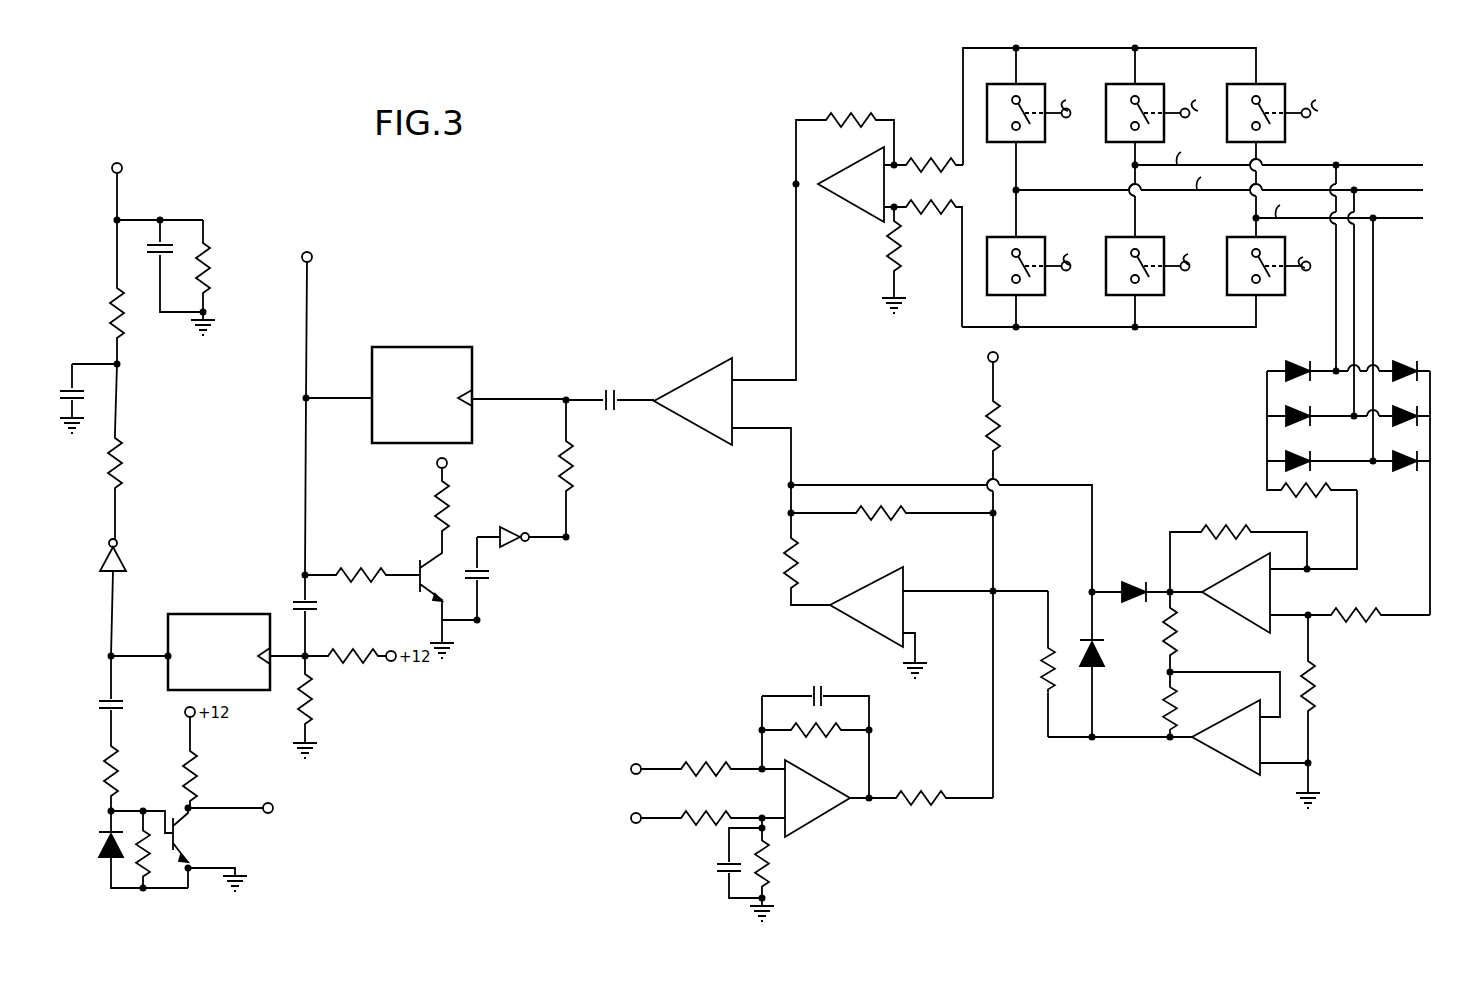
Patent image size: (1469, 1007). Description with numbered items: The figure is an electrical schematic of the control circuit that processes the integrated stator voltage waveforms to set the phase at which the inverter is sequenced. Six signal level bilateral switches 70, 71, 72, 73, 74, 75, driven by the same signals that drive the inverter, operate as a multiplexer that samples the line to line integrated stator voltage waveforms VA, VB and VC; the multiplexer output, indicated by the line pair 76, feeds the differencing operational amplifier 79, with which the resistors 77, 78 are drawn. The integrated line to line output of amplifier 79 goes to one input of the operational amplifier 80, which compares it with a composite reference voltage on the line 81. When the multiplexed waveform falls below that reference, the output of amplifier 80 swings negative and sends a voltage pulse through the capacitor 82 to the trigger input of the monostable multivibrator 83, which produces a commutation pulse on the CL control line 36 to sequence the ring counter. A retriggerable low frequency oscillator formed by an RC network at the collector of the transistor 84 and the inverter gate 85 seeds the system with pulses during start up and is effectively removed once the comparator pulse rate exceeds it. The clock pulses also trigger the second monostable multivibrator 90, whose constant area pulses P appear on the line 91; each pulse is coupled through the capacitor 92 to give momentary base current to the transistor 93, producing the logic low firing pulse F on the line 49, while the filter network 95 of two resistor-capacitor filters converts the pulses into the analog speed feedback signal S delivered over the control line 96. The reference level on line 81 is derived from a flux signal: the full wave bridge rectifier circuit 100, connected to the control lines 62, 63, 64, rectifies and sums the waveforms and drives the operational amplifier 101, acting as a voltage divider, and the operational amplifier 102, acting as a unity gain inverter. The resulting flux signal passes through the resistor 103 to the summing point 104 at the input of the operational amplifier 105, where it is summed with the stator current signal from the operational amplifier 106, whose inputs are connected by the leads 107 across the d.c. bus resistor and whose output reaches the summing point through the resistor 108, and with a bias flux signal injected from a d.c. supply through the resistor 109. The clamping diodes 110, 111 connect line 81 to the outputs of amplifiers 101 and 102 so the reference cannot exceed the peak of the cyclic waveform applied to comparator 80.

The CL control line 36 is at (309, 290).
The line 49 is at (229, 807).
The control line 62 is at (1425, 152).
The control line 63 is at (1396, 221).
The control line 64 is at (1384, 150).
The bilateral switch 70 is at (977, 66).
The bilateral switch 71 is at (1048, 216).
The bilateral switch 72 is at (1124, 66).
The bilateral switch 73 is at (1150, 214).
The bilateral switch 74 is at (1249, 68).
The bilateral switch 75 is at (1238, 216).
The line pair 76 is at (1118, 196).
The resistor 77 is at (930, 166).
The resistor 78 is at (950, 214).
The differencing operational amplifier 79 is at (852, 210).
The operational amplifier 80 is at (700, 378).
The line 81 is at (773, 428).
The capacitor 82 is at (608, 394).
The monostable multivibrator 83 is at (427, 399).
The transistor 84 is at (426, 565).
The inverter gate 85 is at (503, 533).
The second monostable multivibrator 90 is at (233, 660).
The line 91 is at (140, 654).
The capacitor 92 is at (118, 702).
The transistor 93 is at (172, 820).
The filter network 95 is at (137, 385).
The control line 96 is at (122, 166).
The full wave bridge rectifier circuit 100 is at (1251, 459).
The operational amplifier 101 is at (1242, 588).
The operational amplifier 102 is at (1242, 722).
The resistor 103 is at (1050, 668).
The summing point 104 is at (984, 590).
The operational amplifier 105 is at (862, 592).
The operational amplifier 106 is at (815, 808).
The leads 107 is at (632, 814).
The resistor 108 is at (934, 797).
The resistor 109 is at (998, 420).
The clamping diode 110 is at (1104, 660).
The clamping diode 111 is at (1146, 560).